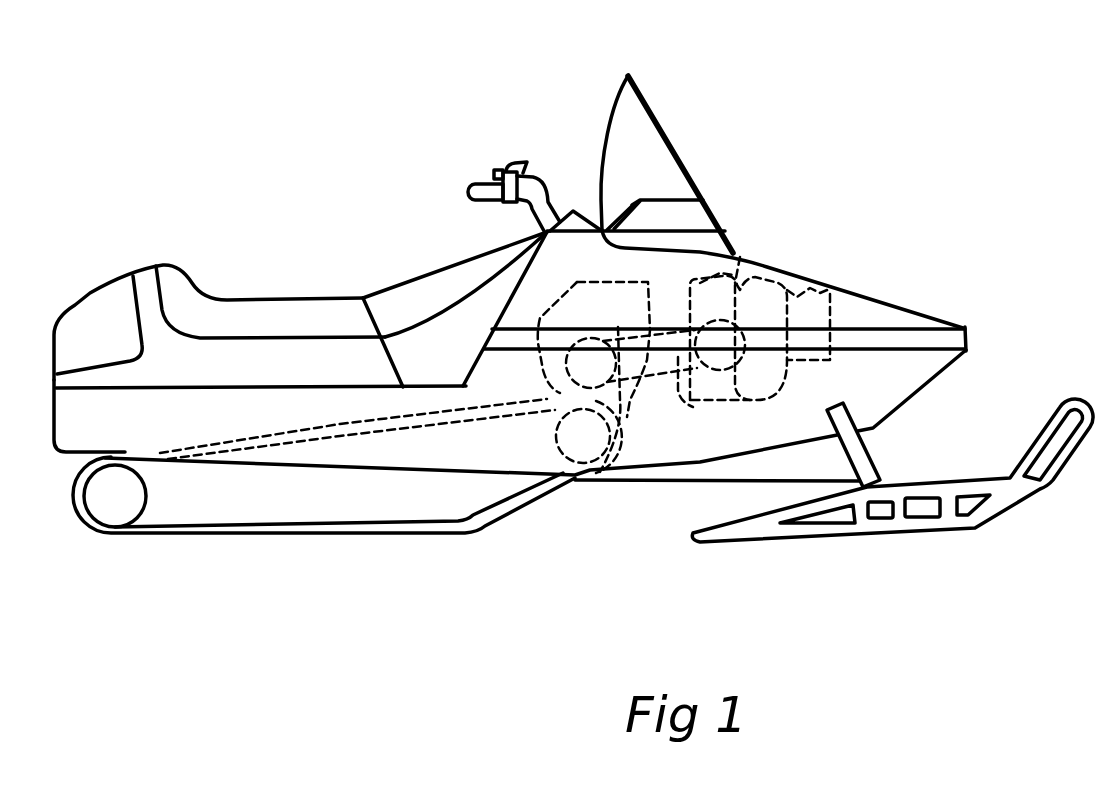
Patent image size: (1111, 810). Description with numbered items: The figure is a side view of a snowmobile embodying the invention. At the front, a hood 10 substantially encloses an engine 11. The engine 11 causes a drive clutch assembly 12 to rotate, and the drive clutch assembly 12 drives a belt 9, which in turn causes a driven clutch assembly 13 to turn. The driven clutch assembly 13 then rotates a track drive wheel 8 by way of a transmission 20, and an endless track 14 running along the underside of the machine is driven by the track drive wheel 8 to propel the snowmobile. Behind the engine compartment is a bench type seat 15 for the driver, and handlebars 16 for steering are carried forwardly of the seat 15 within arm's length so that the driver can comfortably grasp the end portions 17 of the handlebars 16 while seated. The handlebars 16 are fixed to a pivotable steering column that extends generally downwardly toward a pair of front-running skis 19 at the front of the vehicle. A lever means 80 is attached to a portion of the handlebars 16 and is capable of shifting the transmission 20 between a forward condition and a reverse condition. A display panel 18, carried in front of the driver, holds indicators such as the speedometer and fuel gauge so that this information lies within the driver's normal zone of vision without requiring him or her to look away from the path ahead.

The track drive wheel 8 is at (553, 436).
The belt 9 is at (695, 403).
The hood 10 is at (783, 271).
The engine 11 is at (827, 290).
The drive clutch assembly 12 is at (740, 257).
The driven clutch assembly 13 is at (568, 370).
The endless track 14 is at (282, 531).
The bench type seat 15 is at (233, 308).
The handlebars 16 is at (548, 190).
The end portions 17 is at (470, 194).
The display panel 18 is at (632, 205).
The front-running skis 19 is at (818, 533).
The transmission 20 is at (630, 397).
The lever means 80 is at (505, 167).